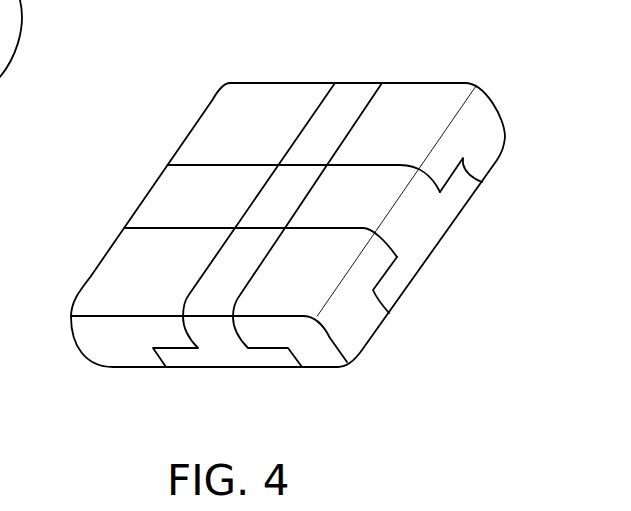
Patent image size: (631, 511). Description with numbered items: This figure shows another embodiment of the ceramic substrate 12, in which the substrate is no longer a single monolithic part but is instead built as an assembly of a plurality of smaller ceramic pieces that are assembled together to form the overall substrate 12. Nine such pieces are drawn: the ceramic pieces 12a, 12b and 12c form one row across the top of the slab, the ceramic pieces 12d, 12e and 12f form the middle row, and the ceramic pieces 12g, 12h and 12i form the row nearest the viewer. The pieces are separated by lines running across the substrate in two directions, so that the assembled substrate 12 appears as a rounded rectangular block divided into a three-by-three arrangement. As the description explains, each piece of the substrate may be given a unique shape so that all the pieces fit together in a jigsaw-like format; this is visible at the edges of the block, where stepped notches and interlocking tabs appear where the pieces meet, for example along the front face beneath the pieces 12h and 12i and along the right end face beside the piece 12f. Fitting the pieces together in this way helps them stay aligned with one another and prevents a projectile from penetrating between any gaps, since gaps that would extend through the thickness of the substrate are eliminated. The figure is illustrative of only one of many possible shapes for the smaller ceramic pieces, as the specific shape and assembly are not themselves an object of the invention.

The substrate 12 is at (121, 113).
The ceramic piece 12a is at (258, 107).
The ceramic piece 12b is at (345, 88).
The ceramic piece 12c is at (428, 98).
The ceramic piece 12d is at (160, 212).
The ceramic piece 12e is at (278, 198).
The ceramic piece 12f is at (425, 230).
The ceramic piece 12g is at (118, 273).
The ceramic piece 12h is at (213, 353).
The ceramic piece 12i is at (367, 318).